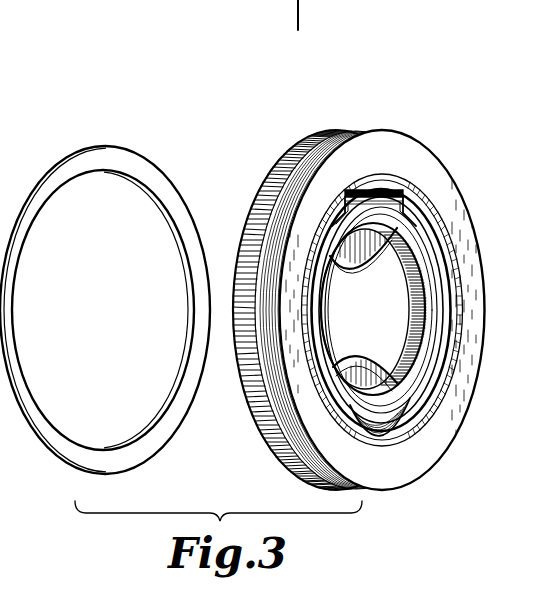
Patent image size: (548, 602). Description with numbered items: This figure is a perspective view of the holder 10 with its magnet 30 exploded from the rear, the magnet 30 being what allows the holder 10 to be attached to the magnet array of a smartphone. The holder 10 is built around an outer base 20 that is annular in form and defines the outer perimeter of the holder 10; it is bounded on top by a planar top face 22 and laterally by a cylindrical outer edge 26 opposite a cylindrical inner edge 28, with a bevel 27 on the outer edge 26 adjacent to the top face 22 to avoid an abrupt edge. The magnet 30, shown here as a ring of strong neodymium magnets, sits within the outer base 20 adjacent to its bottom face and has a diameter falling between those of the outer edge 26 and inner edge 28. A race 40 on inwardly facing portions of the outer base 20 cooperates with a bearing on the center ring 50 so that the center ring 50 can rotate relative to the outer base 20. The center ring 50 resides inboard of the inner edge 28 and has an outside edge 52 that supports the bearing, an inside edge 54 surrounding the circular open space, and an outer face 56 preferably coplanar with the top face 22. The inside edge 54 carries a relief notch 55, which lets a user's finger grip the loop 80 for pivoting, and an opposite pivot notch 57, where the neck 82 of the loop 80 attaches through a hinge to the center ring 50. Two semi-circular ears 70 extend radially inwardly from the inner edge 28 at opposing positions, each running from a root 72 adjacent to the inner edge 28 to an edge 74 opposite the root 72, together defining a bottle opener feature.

The holder 10 is at (227, 98).
The outer base 20 is at (414, 127).
The top face 22 is at (417, 167).
The outer edge 26 is at (283, 130).
The bevel 27 is at (329, 130).
The inner edge 28 is at (450, 250).
The magnet 30 is at (69, 140).
The race 40 is at (458, 290).
The center ring 50 is at (456, 311).
The outside edge 52 is at (452, 375).
The inside edge 54 is at (390, 383).
The relief notch 55 is at (390, 433).
The outer face 56 is at (447, 352).
The pivot notch 57 is at (403, 203).
The ears 70 is at (368, 258).
The root 72 is at (400, 406).
The edge 74 is at (335, 264).
The loop 80 is at (333, 377).
The neck 82 is at (373, 210).